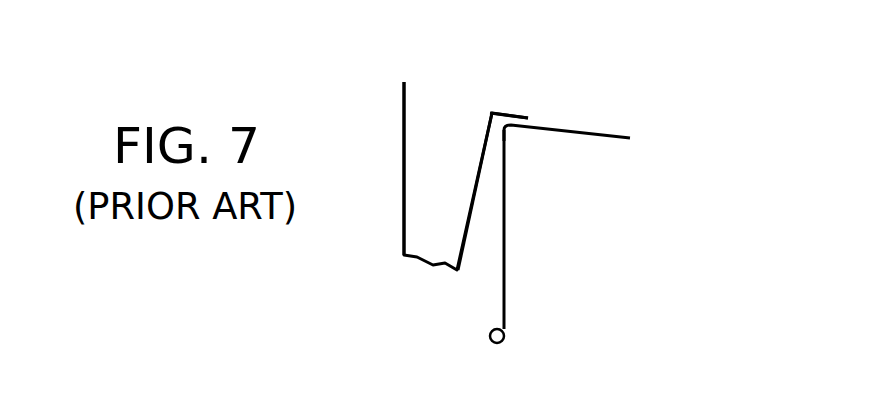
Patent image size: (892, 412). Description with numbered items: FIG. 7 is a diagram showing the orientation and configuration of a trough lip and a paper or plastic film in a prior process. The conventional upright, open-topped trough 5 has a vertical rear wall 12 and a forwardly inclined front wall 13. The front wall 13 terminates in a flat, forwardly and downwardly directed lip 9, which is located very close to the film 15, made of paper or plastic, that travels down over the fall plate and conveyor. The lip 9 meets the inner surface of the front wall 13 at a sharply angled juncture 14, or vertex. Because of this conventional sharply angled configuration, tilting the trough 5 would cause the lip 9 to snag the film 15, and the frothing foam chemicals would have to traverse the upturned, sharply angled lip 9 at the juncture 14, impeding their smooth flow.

The trough 5 is at (428, 90).
The lip 9 is at (520, 112).
The rear wall 12 is at (402, 163).
The front wall 13 is at (473, 200).
The juncture 14 is at (490, 112).
The film 15 is at (507, 213).